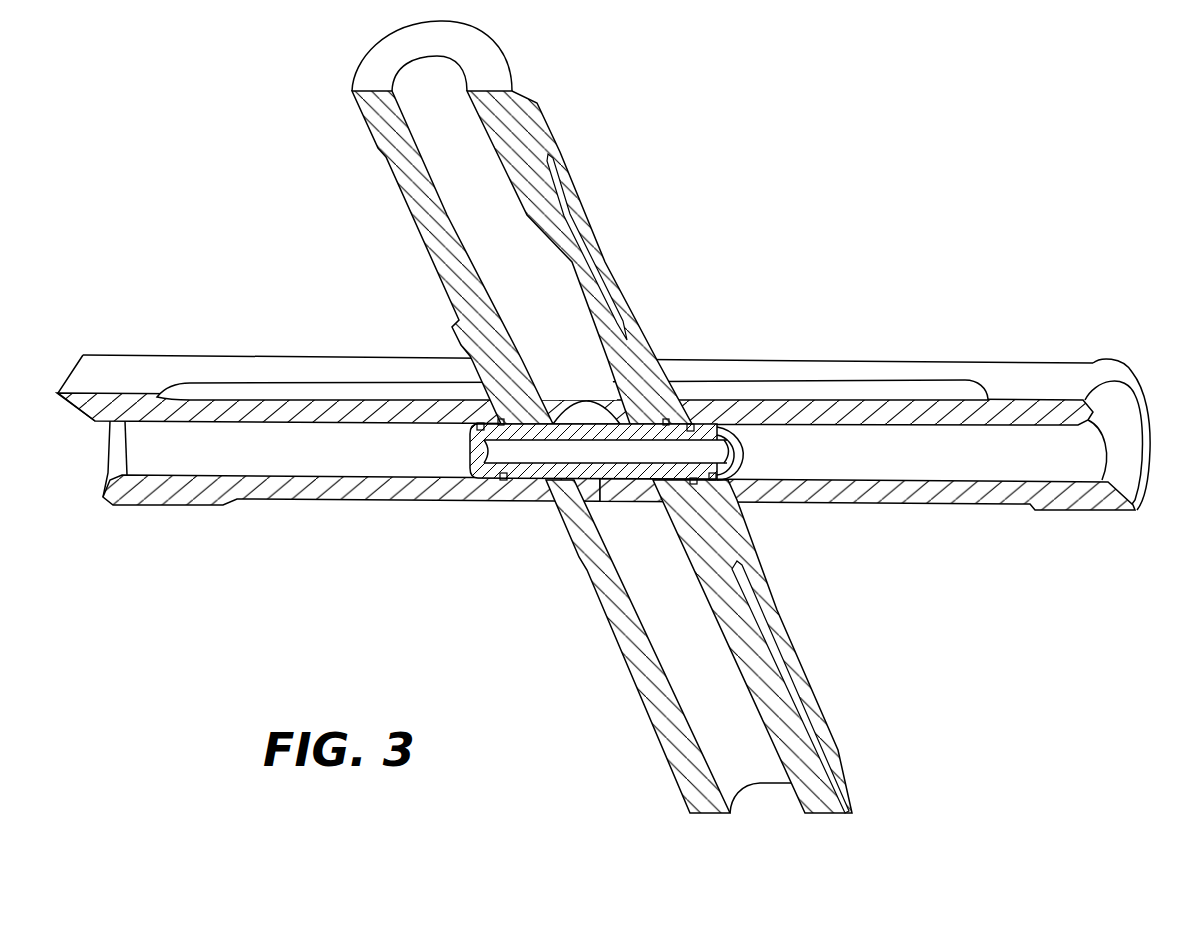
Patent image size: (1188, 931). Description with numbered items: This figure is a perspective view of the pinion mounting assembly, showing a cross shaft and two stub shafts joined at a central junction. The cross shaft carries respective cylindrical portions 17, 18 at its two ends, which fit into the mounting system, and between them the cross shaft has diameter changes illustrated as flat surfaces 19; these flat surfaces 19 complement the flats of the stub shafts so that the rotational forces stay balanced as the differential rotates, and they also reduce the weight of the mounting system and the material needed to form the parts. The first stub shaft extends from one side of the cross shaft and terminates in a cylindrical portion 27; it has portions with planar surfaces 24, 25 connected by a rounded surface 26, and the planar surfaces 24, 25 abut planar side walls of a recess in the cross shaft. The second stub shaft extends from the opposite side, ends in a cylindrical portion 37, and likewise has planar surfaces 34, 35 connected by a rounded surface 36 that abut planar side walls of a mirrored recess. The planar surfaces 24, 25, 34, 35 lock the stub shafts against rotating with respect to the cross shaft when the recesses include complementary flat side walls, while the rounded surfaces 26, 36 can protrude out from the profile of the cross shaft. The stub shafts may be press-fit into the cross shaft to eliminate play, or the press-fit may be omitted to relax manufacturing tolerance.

The cylindrical portion 17 is at (533, 93).
The cylindrical portion 18 is at (823, 790).
The flat surfaces 19 is at (578, 247).
The planar surface 24 is at (255, 393).
The planar surface 25 is at (305, 503).
The rounded surface 26 is at (372, 357).
The cylindrical portion 27 is at (92, 354).
The planar surface 34 is at (770, 385).
The planar surface 35 is at (875, 505).
The rounded surface 36 is at (920, 360).
The cylindrical portion 37 is at (1068, 374).